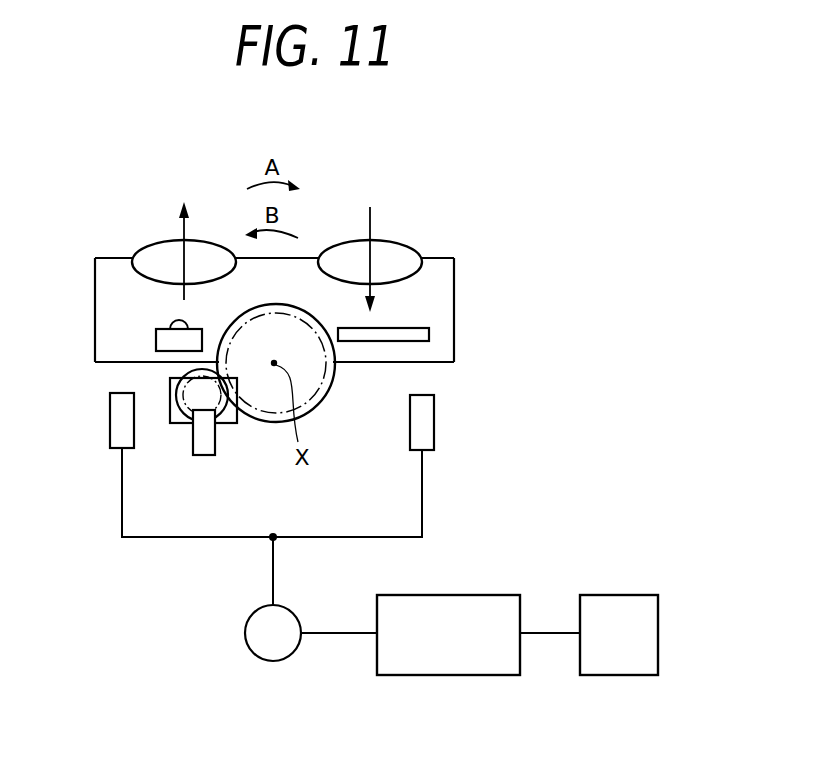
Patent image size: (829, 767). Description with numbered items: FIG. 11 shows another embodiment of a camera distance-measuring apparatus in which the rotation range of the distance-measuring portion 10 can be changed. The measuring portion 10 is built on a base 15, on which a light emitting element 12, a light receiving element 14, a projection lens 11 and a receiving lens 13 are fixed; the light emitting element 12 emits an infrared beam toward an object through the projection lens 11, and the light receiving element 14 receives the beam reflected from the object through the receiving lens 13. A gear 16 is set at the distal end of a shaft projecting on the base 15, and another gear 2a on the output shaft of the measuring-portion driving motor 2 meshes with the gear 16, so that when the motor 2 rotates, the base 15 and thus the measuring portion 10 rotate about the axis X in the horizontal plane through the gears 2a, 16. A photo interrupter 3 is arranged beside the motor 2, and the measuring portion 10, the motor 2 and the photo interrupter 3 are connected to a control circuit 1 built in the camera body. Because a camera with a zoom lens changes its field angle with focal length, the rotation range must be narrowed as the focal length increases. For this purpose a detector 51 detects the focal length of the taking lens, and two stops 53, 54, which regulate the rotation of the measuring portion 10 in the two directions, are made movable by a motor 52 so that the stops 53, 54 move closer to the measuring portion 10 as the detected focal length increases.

The control circuit 1 is at (483, 595).
The measuring-portion driving motor 2 is at (183, 425).
The gear 2a is at (169, 391).
The photo interrupter 3 is at (205, 455).
The distance-measuring portion 10 is at (320, 209).
The projection lens 11 is at (147, 243).
The light emitting element 12 is at (156, 340).
The receiving lens 13 is at (410, 245).
The light receiving element 14 is at (429, 335).
The base 15 is at (454, 290).
The gear 16 is at (330, 395).
The detector 51 is at (622, 595).
The motor 52 is at (266, 661).
The stop 53 is at (434, 407).
The stop 54 is at (110, 425).